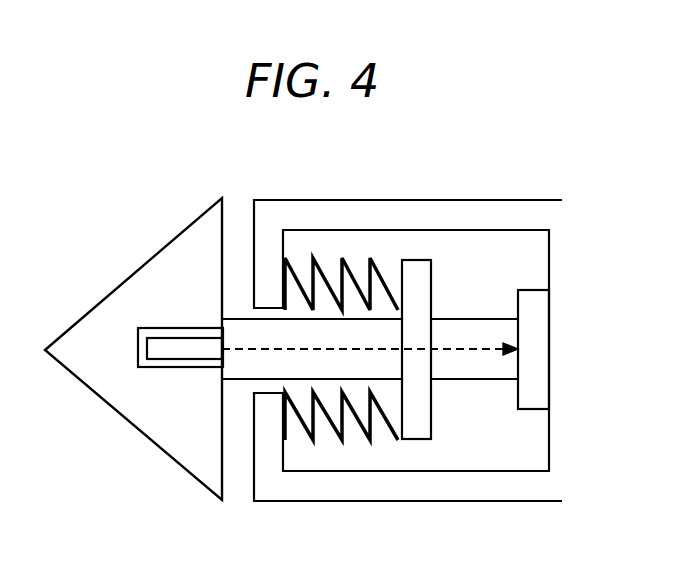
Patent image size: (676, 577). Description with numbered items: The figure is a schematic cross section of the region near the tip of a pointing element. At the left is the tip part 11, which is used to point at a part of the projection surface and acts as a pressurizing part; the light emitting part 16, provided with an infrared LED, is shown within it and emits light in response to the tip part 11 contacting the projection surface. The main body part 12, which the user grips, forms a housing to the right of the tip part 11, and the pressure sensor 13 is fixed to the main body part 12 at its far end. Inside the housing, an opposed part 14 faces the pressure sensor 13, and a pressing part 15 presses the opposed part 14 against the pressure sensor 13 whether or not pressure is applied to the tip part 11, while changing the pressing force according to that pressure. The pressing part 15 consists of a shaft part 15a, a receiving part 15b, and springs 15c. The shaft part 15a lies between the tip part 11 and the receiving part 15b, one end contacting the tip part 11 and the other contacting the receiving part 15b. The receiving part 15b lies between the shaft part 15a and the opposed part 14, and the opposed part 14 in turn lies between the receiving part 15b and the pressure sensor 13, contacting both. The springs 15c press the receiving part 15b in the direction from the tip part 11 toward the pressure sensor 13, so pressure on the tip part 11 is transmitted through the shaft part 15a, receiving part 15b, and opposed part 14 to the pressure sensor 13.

The tip part 11 is at (147, 263).
The main body part 12 is at (432, 200).
The pressure sensor 13 is at (533, 409).
The opposed part 14 is at (475, 380).
The pressing part 15 is at (450, 251).
The shaft part 15a is at (235, 380).
The receiving part 15b is at (416, 439).
The springs 15c is at (340, 440).
The light emitting part 16 is at (169, 359).